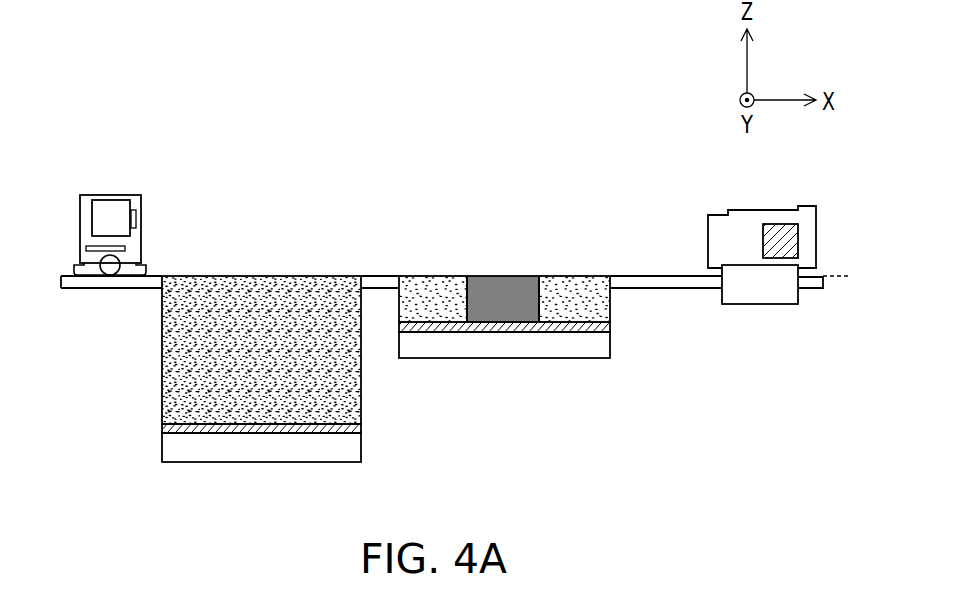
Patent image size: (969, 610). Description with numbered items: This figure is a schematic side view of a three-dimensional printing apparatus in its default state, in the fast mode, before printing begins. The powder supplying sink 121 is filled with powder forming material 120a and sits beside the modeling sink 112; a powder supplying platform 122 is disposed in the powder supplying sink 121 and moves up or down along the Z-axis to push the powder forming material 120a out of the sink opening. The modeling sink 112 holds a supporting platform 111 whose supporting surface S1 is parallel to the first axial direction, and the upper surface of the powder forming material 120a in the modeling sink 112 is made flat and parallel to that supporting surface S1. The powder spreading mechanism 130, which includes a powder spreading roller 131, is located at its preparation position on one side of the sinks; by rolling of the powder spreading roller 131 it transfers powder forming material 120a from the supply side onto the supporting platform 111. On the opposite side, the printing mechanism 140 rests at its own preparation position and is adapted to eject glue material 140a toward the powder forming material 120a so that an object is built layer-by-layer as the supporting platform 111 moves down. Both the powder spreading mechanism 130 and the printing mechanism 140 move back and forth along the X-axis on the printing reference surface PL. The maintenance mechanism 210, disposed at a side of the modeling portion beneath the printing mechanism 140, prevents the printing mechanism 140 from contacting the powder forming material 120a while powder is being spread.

The powder spreading mechanism 130 is at (110, 195).
The powder spreading roller 131 is at (106, 263).
The powder forming material 120a is at (278, 305).
The powder supplying sink 121 is at (340, 455).
The powder supplying platform 122 is at (280, 430).
The supporting surface S1 is at (429, 320).
The supporting platform 111 is at (518, 333).
The modeling sink 112 is at (580, 353).
The printing mechanism 140 is at (722, 233).
The glue material 140a is at (785, 230).
The maintenance mechanism 210 is at (772, 295).
The printing reference surface PL is at (849, 277).